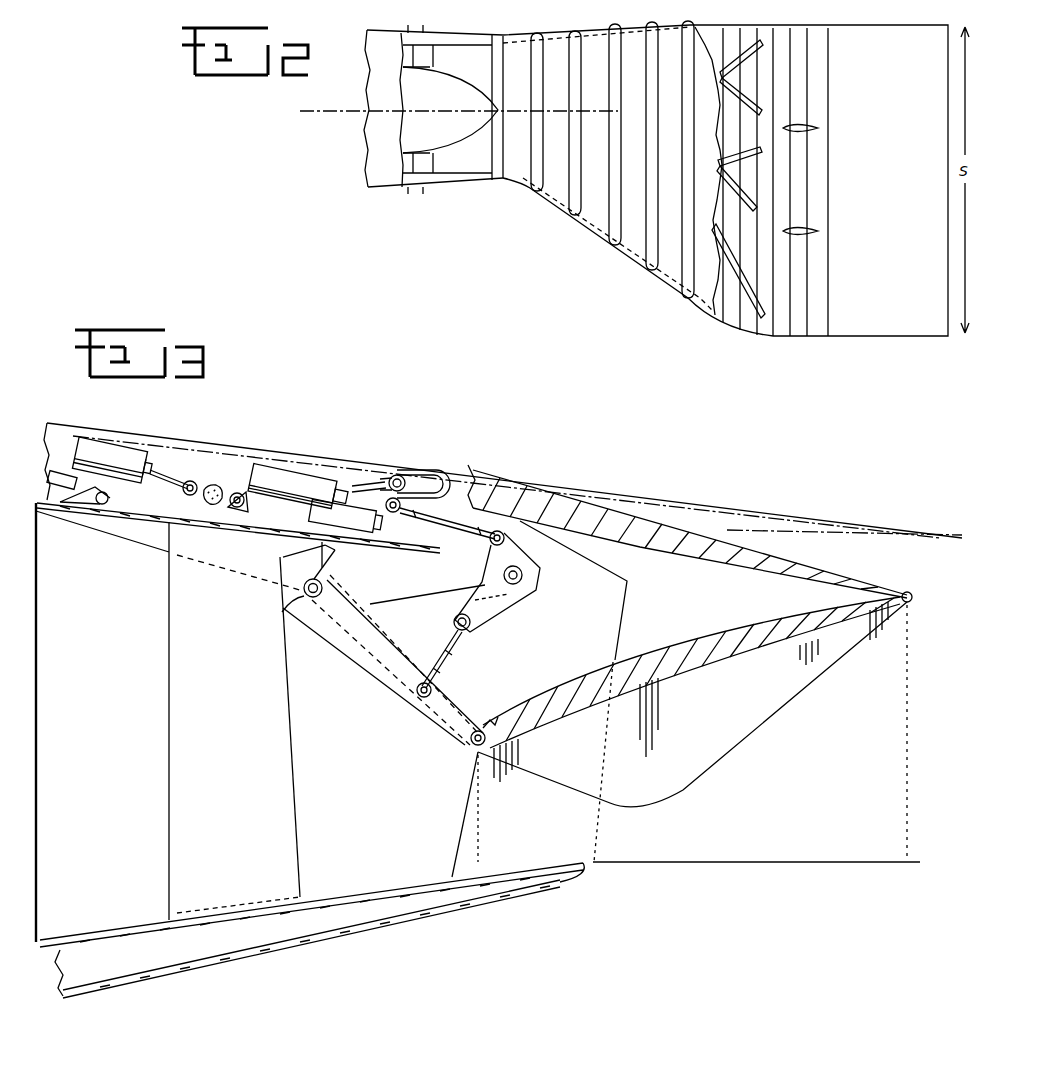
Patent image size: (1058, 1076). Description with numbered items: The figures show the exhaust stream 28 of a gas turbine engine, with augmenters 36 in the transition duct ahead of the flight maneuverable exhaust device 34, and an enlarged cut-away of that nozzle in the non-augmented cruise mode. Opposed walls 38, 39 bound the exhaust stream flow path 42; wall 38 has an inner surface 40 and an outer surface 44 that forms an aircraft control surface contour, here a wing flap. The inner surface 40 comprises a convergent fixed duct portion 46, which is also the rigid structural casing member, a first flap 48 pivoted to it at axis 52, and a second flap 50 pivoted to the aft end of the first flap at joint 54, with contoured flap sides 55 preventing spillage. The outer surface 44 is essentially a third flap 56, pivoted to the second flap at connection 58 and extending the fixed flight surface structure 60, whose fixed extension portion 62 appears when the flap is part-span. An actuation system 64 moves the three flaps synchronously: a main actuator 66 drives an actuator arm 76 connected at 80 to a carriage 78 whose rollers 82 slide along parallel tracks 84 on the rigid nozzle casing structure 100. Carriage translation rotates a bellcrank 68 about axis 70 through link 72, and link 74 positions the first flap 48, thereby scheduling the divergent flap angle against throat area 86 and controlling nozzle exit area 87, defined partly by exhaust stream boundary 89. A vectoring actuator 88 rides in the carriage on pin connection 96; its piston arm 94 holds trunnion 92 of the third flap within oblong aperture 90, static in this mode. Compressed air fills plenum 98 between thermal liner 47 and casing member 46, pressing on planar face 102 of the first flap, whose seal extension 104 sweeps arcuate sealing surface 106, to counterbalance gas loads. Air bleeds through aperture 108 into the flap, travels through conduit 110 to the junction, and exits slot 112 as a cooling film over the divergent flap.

In FIG. 2, the exhaust stream 28 is at (581, 230).
In FIG. 2, the flight maneuverable exhaust device 34 is at (855, 346).
In FIG. 3, the flight maneuverable exhaust device 34 is at (461, 918).
In FIG. 2, the augmenters 36 is at (755, 198).
In FIG. 3, the wall 38 is at (514, 473).
In FIG. 3, the wall 39 is at (318, 930).
In FIG. 3, the inner surface 40 is at (259, 591).
In FIG. 3, the exhaust stream flow path 42 is at (236, 829).
In FIG. 3, the outer surface 44 is at (570, 500).
In FIG. 3, the fixed duct portion 46 is at (152, 548).
In FIG. 2, the thermal liner 47 is at (630, 250).
In FIG. 3, the thermal liner 47 is at (440, 715).
In FIG. 3, the first flap 48 is at (378, 650).
In FIG. 3, the second flap 50 is at (760, 645).
In FIG. 3, the pivot axis 52 is at (313, 600).
In FIG. 3, the joint 54 is at (478, 728).
In FIG. 3, the contoured flap sides 55 is at (793, 697).
In FIG. 3, the third flap 56 is at (648, 522).
In FIG. 3, the pivot connection 58 is at (914, 597).
In FIG. 3, the fixed flight surface structure 60 is at (336, 458).
In FIG. 3, the fixed extension portion 62 is at (828, 520).
In FIG. 3, the actuation system 64 is at (197, 463).
In FIG. 3, the main actuator 66 is at (105, 458).
In FIG. 3, the bellcrank 68 is at (484, 614).
In FIG. 3, the axis 70 is at (526, 568).
In FIG. 3, the link 72 is at (455, 530).
In FIG. 3, the link 74 is at (450, 657).
In FIG. 3, the actuator arm 76 is at (158, 478).
In FIG. 3, the carriage 78 is at (378, 478).
In FIG. 3, the connection 80 is at (184, 491).
In FIG. 3, the rollers or trunnions 82 is at (218, 489).
In FIG. 3, the tracks 84 is at (378, 520).
In FIG. 3, the throat area 86 is at (483, 827).
In FIG. 3, the nozzle exit area 87 is at (910, 757).
In FIG. 3, the vectoring actuator 88 is at (300, 475).
In FIG. 3, the exhaust stream boundary 89 is at (740, 864).
In FIG. 3, the oblong aperture 90 is at (440, 484).
In FIG. 3, the trunnion 92 is at (402, 477).
In FIG. 3, the piston arm 94 is at (386, 476).
In FIG. 3, the pin connection 96 is at (240, 494).
In FIG. 3, the plenum 98 is at (250, 552).
In FIG. 3, the rigid nozzle casing structure 100 is at (190, 527).
In FIG. 3, the planar face 102 is at (345, 578).
In FIG. 3, the seal extension 104 is at (338, 548).
In FIG. 3, the arcuate sealing surface 106 is at (292, 581).
In FIG. 3, the aperture 108 is at (306, 557).
In FIG. 3, the conduit 110 is at (393, 620).
In FIG. 3, the slot 112 is at (468, 742).